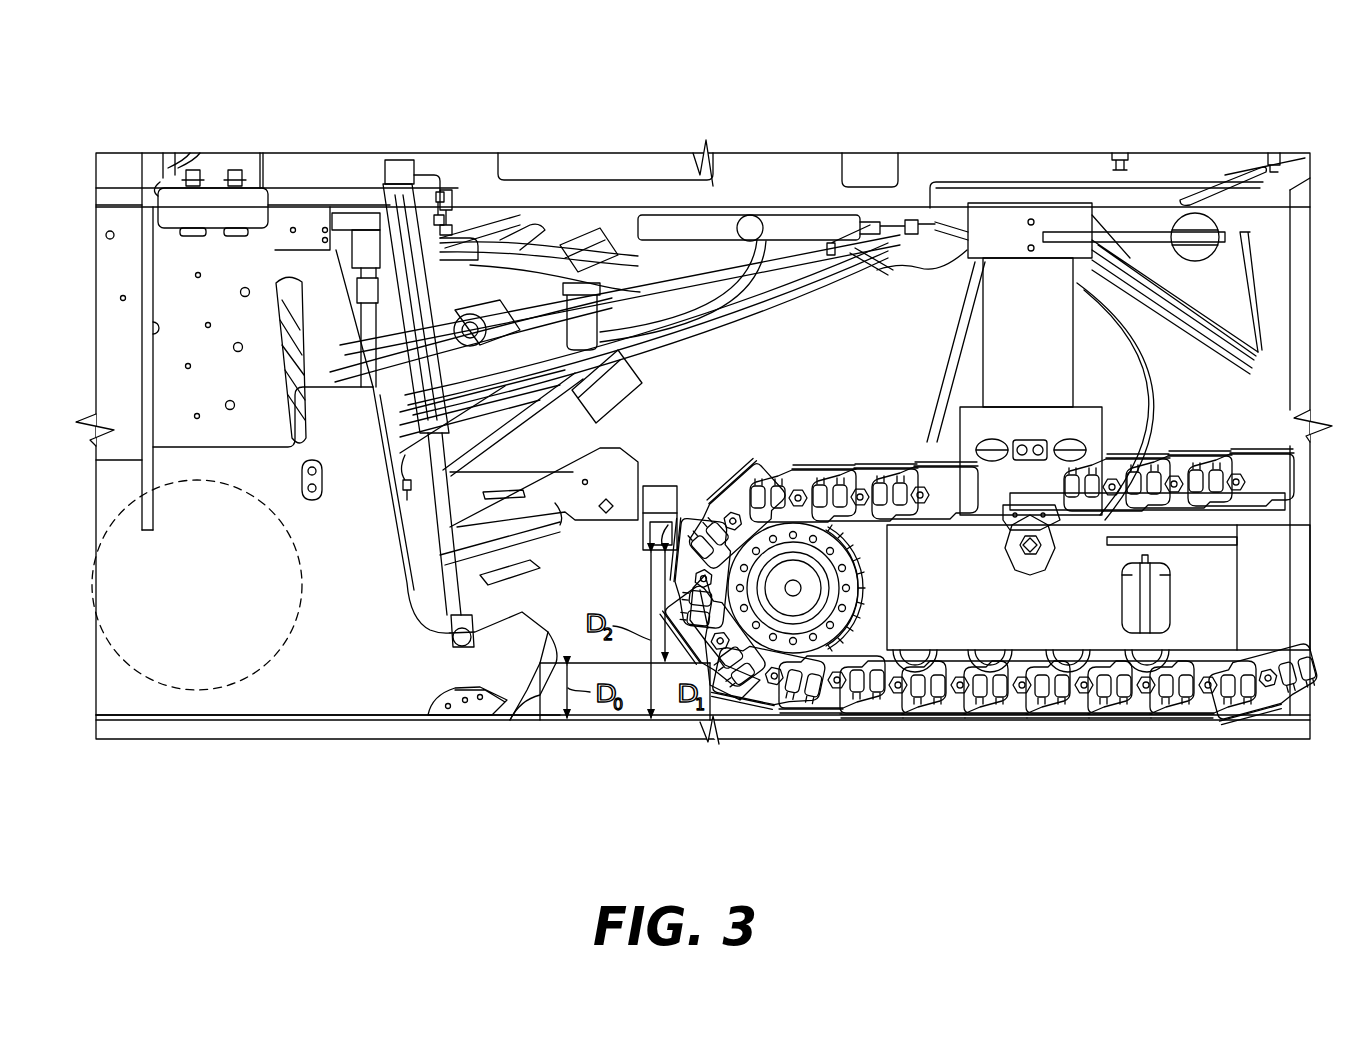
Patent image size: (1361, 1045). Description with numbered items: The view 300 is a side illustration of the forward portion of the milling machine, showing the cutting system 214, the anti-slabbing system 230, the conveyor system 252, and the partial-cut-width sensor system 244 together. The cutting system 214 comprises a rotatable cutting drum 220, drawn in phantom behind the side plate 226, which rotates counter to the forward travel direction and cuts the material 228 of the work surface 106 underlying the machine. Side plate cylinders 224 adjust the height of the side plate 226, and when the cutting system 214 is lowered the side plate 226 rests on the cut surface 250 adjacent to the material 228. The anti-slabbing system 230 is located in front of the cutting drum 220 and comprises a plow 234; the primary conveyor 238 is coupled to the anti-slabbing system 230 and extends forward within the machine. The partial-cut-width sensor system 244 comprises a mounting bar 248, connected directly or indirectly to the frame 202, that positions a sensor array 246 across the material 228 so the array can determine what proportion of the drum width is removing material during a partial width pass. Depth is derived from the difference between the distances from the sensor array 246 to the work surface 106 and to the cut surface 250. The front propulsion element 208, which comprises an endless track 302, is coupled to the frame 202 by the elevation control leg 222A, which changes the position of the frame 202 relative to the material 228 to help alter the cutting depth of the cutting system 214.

The excavation machine assembly 300 is at (130, 82).
The frame 202 is at (218, 160).
The side plate cylinders 224 is at (392, 158).
The conveyor system 252 is at (708, 288).
The elevation control leg 222A is at (1003, 275).
The anti-slabbing system 230 is at (492, 468).
The primary conveyor 238 is at (545, 410).
The mounting bar 248 is at (660, 486).
The sensor array 246 is at (700, 500).
The partial-cut-width sensor system 244 is at (720, 475).
The plow 234 is at (553, 502).
The cutting drum 220 is at (298, 620).
The material 228 is at (530, 685).
The side plate 226 is at (412, 665).
The cutting system 214 is at (185, 722).
The work surface 106 is at (540, 700).
The cut surface 250 is at (770, 698).
The front propulsion element 208 is at (885, 700).
The endless track 302 is at (990, 722).